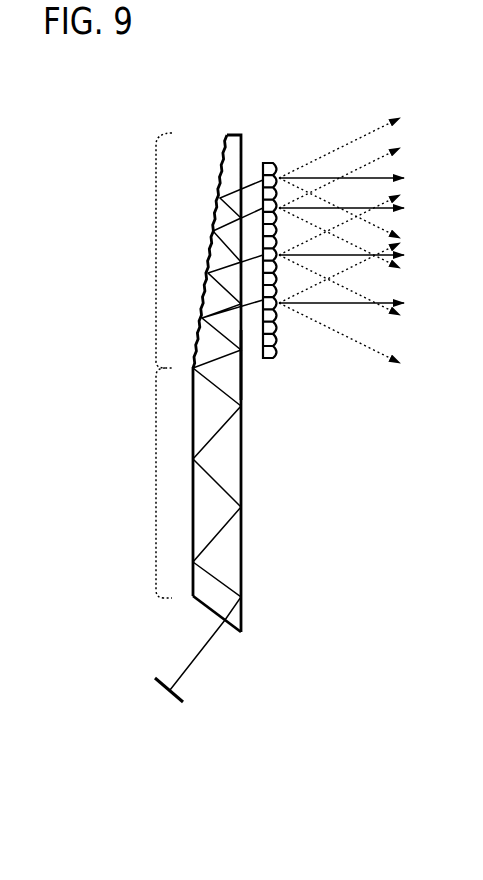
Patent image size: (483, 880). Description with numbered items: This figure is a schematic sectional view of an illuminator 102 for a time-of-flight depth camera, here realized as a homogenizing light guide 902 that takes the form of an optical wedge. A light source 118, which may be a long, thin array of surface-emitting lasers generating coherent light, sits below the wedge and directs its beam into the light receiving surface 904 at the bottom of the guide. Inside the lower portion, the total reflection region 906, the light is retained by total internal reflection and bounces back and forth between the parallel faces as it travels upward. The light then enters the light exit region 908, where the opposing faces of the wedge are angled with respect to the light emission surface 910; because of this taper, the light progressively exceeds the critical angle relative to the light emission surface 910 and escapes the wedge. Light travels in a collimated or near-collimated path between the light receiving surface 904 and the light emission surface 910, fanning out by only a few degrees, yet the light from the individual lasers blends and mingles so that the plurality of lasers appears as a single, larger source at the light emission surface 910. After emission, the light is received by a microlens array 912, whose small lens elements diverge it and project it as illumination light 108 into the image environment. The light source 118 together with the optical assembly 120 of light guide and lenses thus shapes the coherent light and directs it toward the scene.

The illuminator 102 is at (128, 108).
The illumination light 108 is at (365, 380).
The light source 118 is at (183, 703).
The optical assembly 120 is at (291, 552).
The homogenizing light guide 902 is at (237, 135).
The light receiving surface 904 is at (236, 634).
The total reflection region 906 is at (155, 477).
The light exit region 908 is at (155, 252).
The light emission surface 910 is at (243, 358).
The microlens array 912 is at (268, 163).